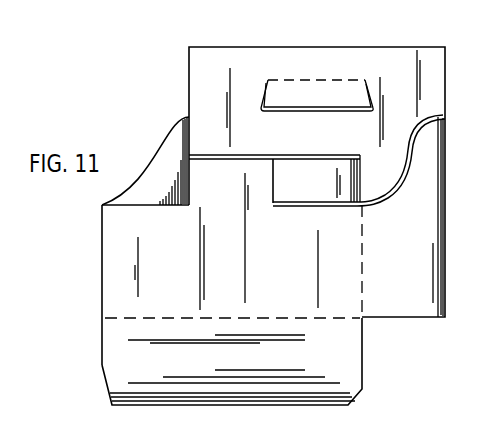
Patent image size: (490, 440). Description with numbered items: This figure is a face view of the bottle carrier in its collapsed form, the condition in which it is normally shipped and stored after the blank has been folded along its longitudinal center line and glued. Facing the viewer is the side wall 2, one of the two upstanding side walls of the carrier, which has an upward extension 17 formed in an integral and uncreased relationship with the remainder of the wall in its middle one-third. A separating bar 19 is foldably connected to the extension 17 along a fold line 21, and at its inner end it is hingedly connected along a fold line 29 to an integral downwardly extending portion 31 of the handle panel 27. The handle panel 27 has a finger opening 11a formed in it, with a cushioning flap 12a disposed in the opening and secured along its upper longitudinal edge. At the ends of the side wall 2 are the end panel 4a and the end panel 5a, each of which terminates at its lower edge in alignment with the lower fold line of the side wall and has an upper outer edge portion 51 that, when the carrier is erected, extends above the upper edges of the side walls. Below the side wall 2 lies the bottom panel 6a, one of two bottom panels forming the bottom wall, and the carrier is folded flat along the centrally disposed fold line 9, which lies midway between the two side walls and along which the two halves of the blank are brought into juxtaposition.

The cushioning flap 12a is at (360, 57).
The finger opening 11a is at (300, 112).
The handle panel 27 is at (408, 104).
The upper outer edge portion 51 is at (160, 136).
The downwardly extending portion 31 is at (397, 177).
The fold line 29 is at (361, 168).
The end panel 4a is at (178, 173).
The upward extension 17 is at (223, 195).
The fold line 21 is at (268, 198).
The separating bar 19 is at (310, 193).
The side wall 2 is at (295, 284).
The end panel 5a is at (406, 274).
The bottom panel 6a is at (118, 363).
The fold line 9 is at (199, 398).